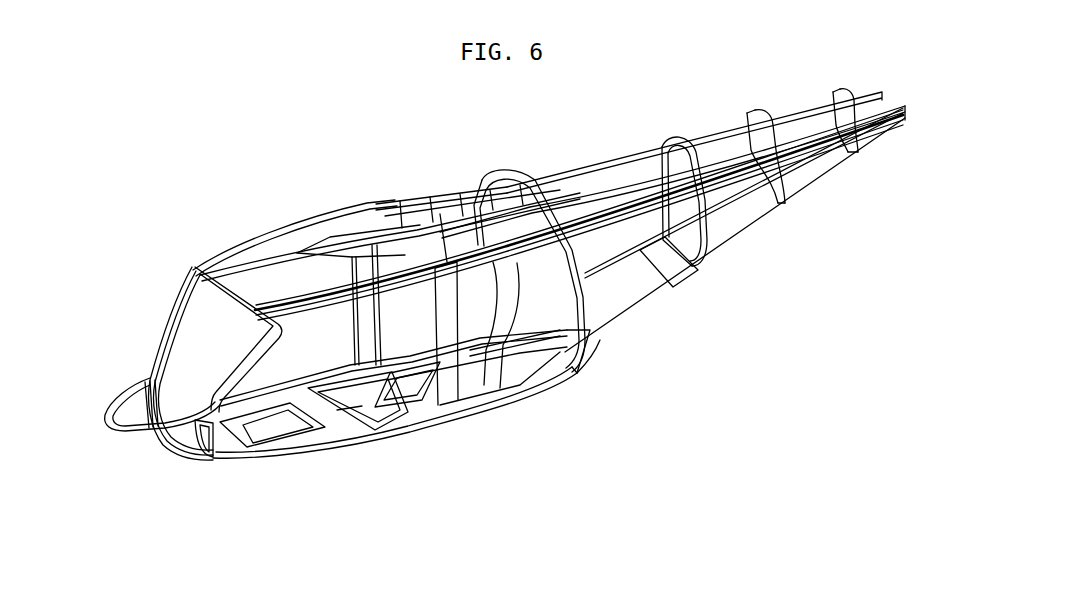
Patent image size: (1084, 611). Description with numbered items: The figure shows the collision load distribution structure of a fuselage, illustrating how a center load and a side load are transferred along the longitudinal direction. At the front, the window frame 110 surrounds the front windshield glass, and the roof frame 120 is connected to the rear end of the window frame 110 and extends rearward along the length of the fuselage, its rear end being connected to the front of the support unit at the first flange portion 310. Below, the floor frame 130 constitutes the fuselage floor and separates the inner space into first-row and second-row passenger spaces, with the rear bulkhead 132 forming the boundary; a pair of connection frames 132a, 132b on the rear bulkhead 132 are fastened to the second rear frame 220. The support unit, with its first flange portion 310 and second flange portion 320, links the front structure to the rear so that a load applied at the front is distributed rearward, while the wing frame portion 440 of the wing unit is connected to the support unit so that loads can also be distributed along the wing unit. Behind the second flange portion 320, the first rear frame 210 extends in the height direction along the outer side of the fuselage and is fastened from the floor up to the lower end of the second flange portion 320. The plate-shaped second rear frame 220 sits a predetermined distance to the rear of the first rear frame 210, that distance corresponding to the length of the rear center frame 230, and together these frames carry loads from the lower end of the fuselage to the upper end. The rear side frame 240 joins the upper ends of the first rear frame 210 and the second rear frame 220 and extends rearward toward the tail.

The window frame 110 is at (163, 322).
The roof frame 120 is at (340, 255).
The floor frame 130 is at (352, 440).
The rear bulkhead 132 is at (430, 372).
The connection frame 132a is at (535, 395).
The connection frame 132b is at (480, 395).
The first rear frame 210 is at (580, 370).
The second rear frame 220 is at (600, 348).
The rear center frame 230 is at (555, 181).
The rear side frame 240 is at (620, 225).
The first flange portion 310 is at (385, 220).
The second flange portion 320 is at (510, 190).
The wing frame portion 440 is at (407, 197).